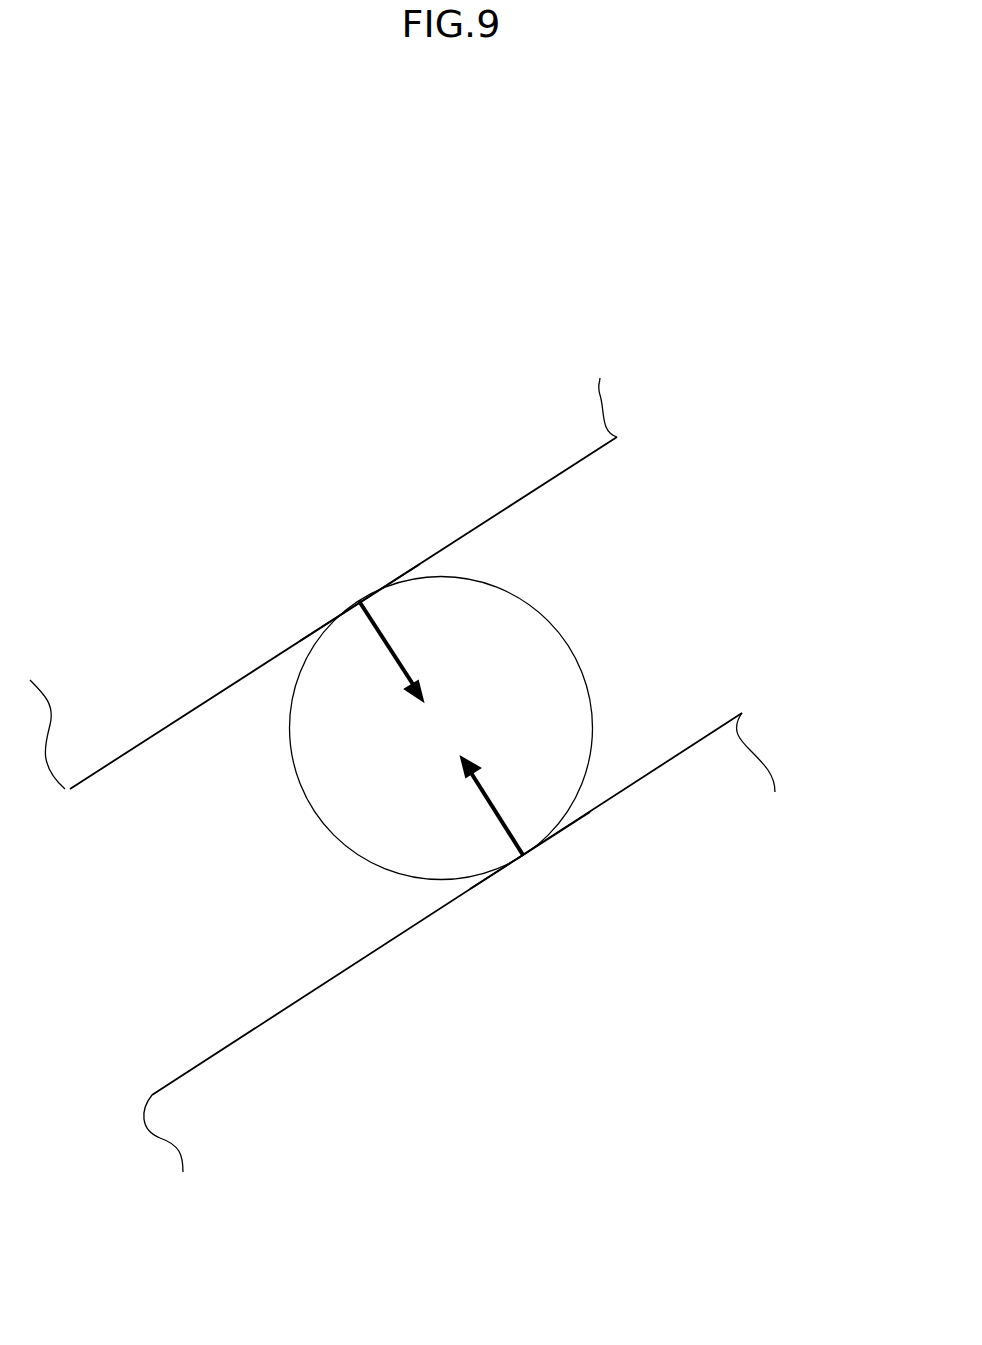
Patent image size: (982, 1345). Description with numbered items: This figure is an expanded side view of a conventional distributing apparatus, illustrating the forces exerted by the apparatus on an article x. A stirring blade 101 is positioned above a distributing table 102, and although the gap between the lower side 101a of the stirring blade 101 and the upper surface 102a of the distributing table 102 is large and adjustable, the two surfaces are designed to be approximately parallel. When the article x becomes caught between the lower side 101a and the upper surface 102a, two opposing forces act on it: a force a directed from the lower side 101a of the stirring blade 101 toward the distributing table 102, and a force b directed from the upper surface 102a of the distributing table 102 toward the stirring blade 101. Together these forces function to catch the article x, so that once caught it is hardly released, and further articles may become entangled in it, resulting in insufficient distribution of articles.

The stirring blade 101 is at (605, 433).
The lower side of the stirring blade 101a is at (558, 478).
The distributing table 102 is at (743, 742).
The upper surface of the distributing table 102a is at (618, 790).
The article x is at (545, 657).
The force directed from the lower side of the stirring blade toward the distributing a is at (404, 651).
The force directed from the upper surface of the distributing table toward the stirr b is at (492, 798).